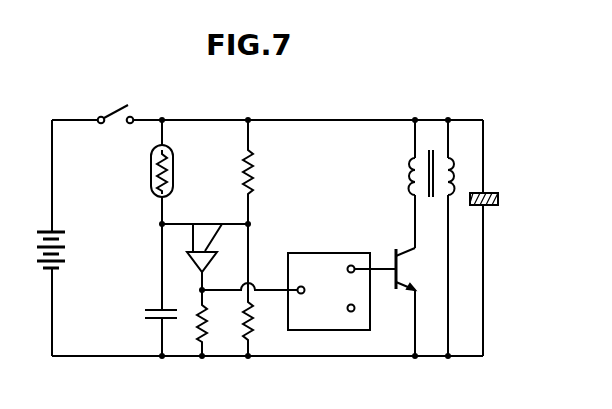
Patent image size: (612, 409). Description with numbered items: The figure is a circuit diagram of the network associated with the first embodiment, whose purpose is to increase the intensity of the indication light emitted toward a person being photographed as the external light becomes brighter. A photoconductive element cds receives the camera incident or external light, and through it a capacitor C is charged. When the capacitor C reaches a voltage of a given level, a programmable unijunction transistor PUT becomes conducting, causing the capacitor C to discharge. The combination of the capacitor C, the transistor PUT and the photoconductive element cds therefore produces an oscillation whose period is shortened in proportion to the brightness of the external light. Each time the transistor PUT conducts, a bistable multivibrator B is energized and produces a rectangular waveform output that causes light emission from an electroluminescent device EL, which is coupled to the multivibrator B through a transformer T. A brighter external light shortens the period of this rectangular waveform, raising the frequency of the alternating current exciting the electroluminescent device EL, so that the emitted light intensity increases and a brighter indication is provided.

The photoconductive element cds is at (173, 168).
The programmable unijunction transistor PUT is at (199, 250).
The capacitor C is at (144, 314).
The bistable multivibrator B is at (329, 291).
The transformer T is at (429, 148).
The electroluminescent device EL is at (498, 198).